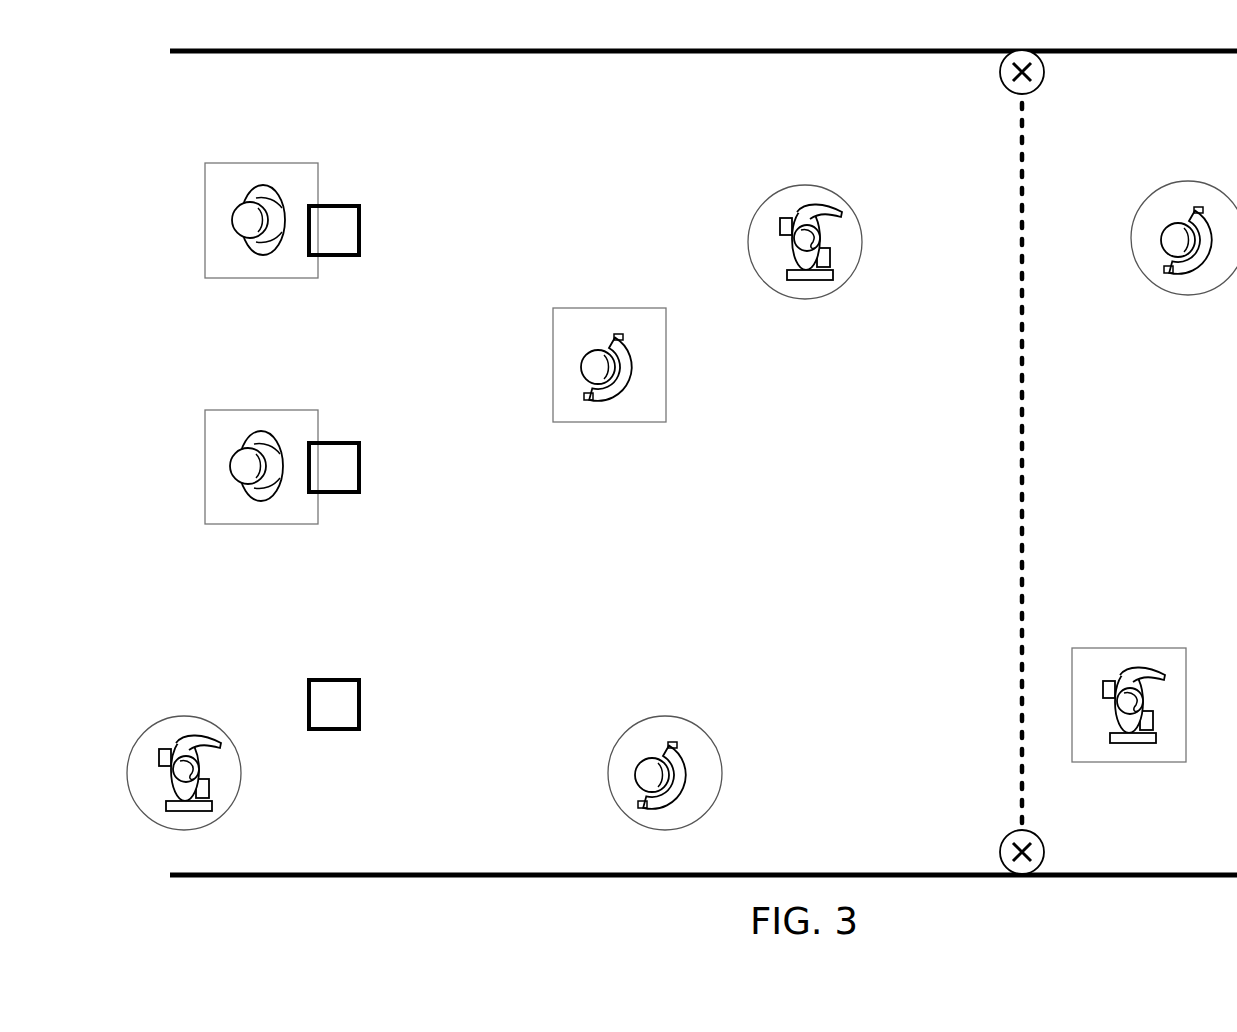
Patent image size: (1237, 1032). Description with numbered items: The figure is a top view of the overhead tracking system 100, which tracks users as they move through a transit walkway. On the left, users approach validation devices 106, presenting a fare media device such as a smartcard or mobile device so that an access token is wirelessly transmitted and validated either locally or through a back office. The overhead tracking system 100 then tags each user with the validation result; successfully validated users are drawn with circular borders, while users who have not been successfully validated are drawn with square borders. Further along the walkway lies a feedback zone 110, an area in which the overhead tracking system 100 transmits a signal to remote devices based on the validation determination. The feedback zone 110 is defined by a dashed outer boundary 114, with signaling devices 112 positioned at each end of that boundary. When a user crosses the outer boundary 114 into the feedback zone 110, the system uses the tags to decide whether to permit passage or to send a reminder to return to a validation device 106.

The overhead tracking system 100 is at (719, 36).
The validation device 106 is at (337, 205).
The feedback zone 110 is at (1158, 475).
The signaling device 112 is at (1003, 96).
The outer boundary 114 is at (1020, 433).